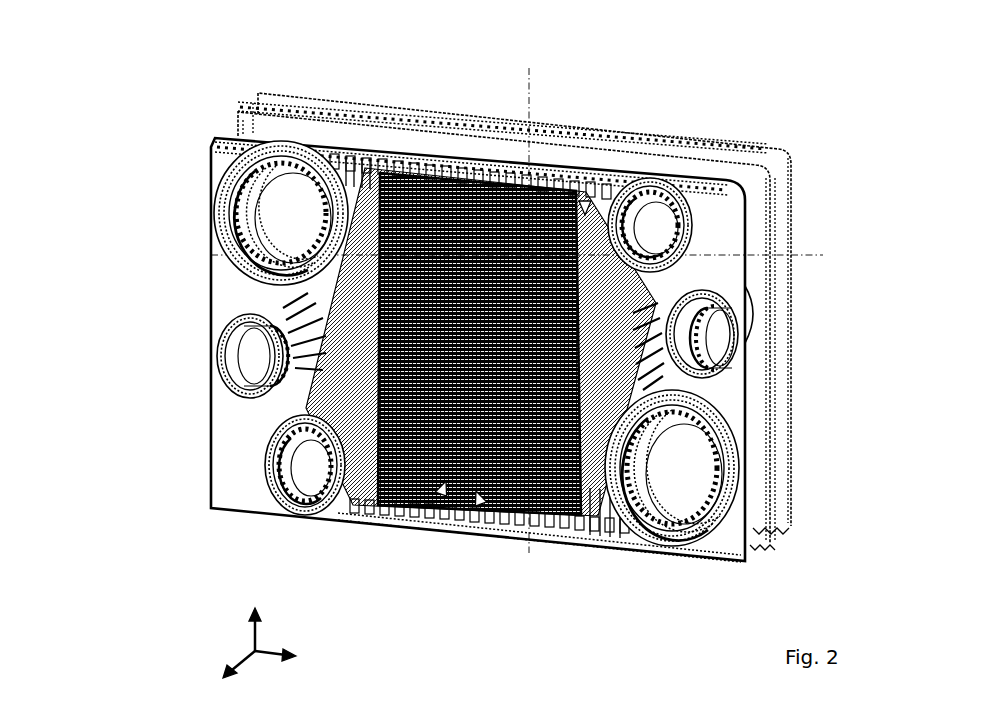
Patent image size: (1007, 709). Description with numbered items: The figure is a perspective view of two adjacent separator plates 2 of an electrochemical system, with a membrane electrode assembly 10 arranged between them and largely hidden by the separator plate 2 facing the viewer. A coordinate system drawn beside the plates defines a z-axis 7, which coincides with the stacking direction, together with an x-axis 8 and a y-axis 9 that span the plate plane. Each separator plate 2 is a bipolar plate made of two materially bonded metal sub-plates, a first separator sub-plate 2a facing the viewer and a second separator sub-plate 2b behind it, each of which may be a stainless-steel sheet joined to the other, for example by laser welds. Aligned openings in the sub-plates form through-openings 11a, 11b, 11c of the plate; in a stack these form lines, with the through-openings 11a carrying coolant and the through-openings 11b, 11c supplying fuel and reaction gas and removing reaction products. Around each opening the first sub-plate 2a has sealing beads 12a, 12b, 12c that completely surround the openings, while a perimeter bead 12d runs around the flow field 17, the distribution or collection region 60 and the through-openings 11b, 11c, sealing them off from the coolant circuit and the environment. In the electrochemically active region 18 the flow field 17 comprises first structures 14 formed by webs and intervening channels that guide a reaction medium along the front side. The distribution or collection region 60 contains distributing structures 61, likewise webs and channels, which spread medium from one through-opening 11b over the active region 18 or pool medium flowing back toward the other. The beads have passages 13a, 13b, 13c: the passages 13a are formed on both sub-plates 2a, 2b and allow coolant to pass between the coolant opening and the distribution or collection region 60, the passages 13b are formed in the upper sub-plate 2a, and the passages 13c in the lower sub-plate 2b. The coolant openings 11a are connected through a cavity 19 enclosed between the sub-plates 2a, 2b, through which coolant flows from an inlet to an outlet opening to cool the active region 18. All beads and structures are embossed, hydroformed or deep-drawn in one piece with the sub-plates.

The separator plate 2 is at (773, 405).
The first separator sub-plate 2a is at (725, 193).
The second separator sub-plate 2b is at (788, 176).
The z-axis 7 is at (235, 651).
The x-axis 8 is at (264, 641).
The y-axis 9 is at (244, 624).
The membrane electrode assembly 10 is at (750, 415).
The through-openings for coolant 11a is at (240, 372).
The through-openings for fuel or reaction gas 11b is at (643, 207).
The through-openings for reaction gas or fuel 11c is at (255, 230).
The sealing bead around coolant opening 12a is at (233, 390).
The sealing bead around second opening 12b is at (627, 188).
The sealing bead around third opening 12c is at (282, 148).
The perimeter bead 12d is at (477, 157).
The passages in coolant sealing bead 13a is at (257, 325).
The passages in upper sub-plate bead 13b is at (667, 207).
The passages in lower sub-plate bead 13c is at (313, 203).
The first structures 14 is at (548, 457).
The flow field 17 is at (433, 486).
The electrochemically active region 18 is at (473, 496).
The cavity 19 is at (270, 345).
The distribution or collection region 60 is at (637, 280).
The distributing structures 61 is at (577, 193).